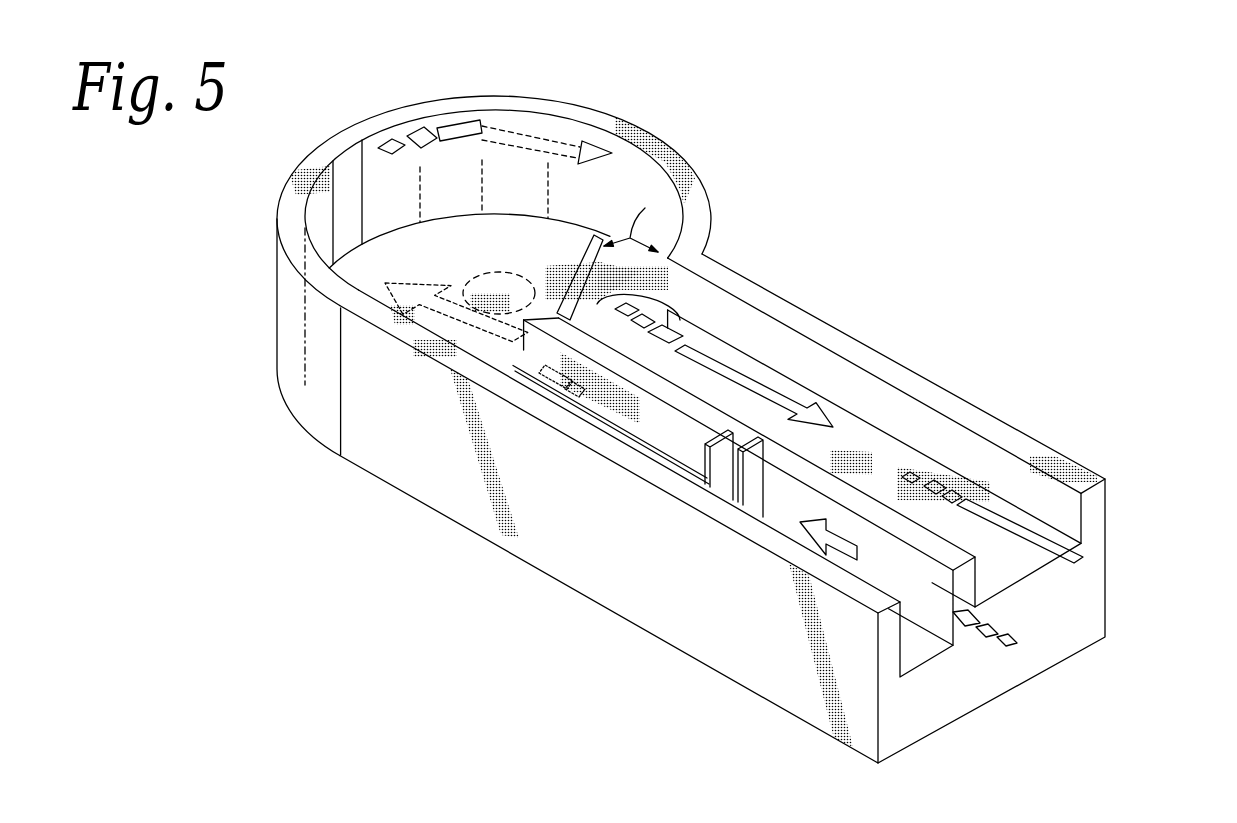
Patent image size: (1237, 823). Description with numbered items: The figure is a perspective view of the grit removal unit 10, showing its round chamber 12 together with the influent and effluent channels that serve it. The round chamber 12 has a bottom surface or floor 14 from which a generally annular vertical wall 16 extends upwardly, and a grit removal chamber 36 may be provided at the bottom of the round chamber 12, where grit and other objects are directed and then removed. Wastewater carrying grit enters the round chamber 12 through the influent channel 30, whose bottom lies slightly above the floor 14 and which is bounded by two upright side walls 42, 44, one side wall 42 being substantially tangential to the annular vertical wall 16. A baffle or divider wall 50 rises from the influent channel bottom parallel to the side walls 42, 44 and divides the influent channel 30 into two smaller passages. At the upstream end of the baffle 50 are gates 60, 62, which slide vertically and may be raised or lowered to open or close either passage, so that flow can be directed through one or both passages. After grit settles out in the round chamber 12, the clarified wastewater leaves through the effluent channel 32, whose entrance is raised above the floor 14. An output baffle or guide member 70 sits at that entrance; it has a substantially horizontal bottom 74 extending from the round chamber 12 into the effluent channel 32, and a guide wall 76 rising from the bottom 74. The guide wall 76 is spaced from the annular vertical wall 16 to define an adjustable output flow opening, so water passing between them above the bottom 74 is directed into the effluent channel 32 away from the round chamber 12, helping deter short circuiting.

The grit removal unit 10 is at (757, 120).
The round chamber 12 is at (277, 310).
The bottom surface or floor 14 is at (451, 275).
The annular vertical wall 16 is at (482, 157).
The influent channel 30 is at (915, 650).
The effluent channel 32 is at (1047, 537).
The grit removal chamber 36 is at (386, 282).
The upright side wall 42 is at (790, 516).
The upright side wall 44 is at (895, 562).
The baffle or divider wall 50 is at (686, 462).
The gate 60 is at (710, 497).
The gate 62 is at (758, 490).
The output baffle or guide member 70 is at (650, 307).
The guide member bottom 74 is at (631, 344).
The guide wall 76 is at (570, 282).